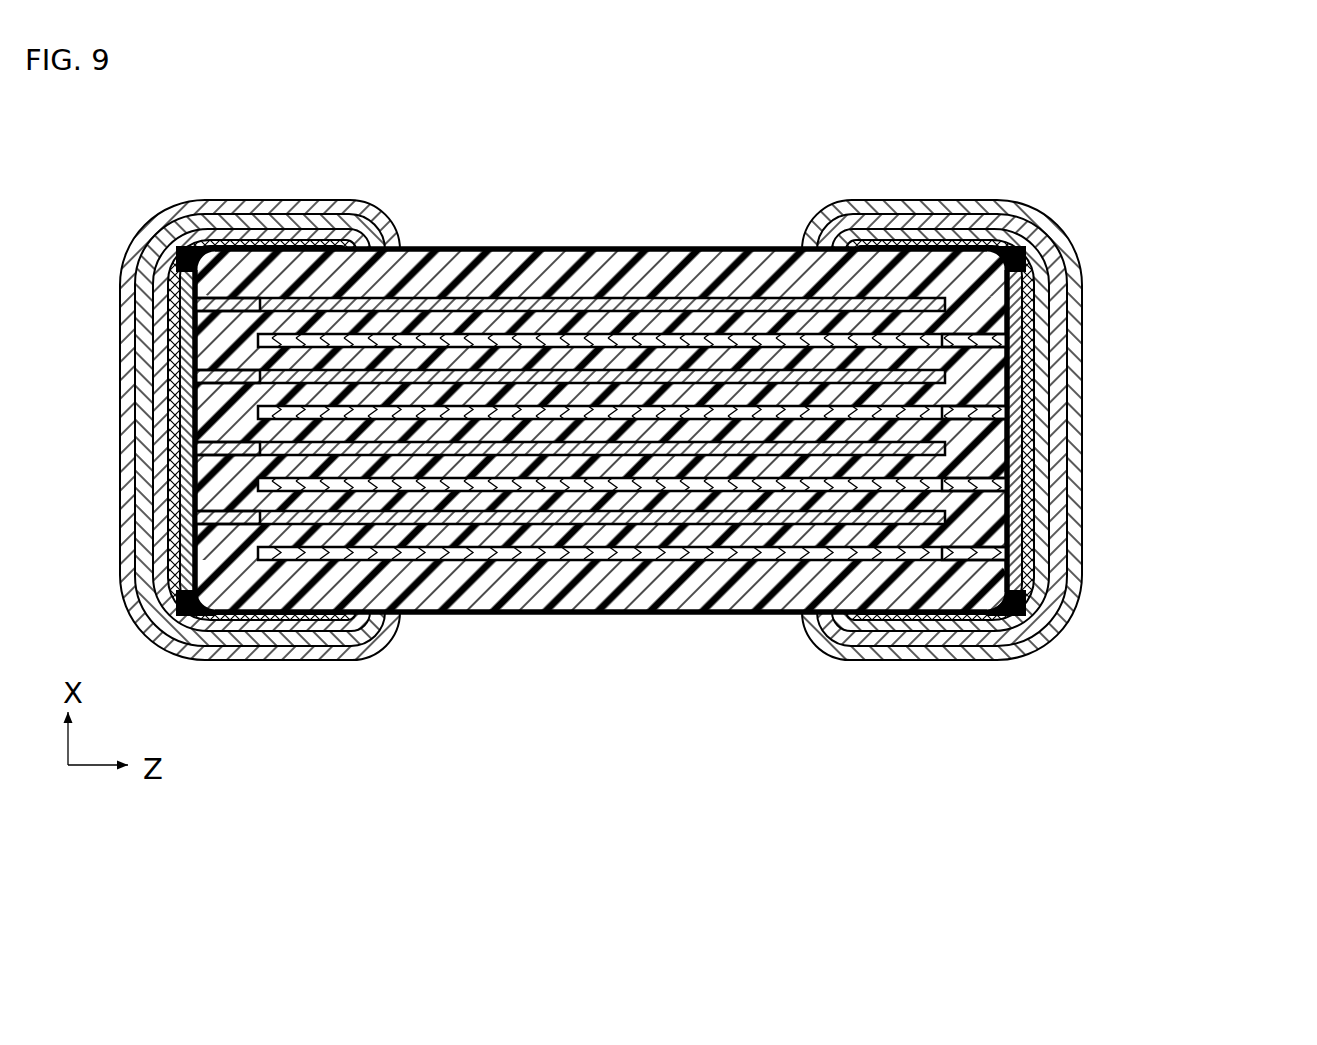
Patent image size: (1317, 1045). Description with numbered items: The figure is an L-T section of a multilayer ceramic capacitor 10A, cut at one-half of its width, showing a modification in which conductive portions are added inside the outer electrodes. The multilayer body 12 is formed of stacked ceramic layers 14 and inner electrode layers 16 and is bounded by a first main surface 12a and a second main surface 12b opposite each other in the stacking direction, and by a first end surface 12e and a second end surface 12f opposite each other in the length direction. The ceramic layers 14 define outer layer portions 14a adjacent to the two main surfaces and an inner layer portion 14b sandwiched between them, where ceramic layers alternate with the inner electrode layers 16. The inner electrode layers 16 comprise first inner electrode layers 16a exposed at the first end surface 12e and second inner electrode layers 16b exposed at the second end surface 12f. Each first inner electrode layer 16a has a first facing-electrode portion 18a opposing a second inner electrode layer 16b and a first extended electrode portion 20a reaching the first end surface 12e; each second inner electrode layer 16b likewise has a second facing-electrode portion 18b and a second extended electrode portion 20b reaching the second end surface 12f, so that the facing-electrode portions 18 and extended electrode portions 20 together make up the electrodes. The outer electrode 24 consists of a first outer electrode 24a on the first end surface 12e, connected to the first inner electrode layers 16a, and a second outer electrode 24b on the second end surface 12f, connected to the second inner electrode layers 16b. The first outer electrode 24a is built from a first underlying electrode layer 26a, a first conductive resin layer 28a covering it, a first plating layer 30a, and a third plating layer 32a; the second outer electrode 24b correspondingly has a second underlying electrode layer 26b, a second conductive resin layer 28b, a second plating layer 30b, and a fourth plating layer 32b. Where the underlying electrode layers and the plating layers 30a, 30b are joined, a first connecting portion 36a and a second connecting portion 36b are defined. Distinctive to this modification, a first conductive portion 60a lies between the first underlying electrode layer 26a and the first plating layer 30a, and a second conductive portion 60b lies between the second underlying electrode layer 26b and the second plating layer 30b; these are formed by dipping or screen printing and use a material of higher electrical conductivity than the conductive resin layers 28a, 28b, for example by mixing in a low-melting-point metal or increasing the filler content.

The multilayer ceramic capacitor 10A is at (113, 181).
The multilayer body 12 is at (606, 511).
The first main surface 12a is at (739, 247).
The second main surface 12b is at (777, 612).
The first end surface 12e is at (193, 545).
The second end surface 12f is at (1012, 440).
The ceramic layers 14 is at (578, 152).
The outer layer portions 14a is at (609, 277).
The inner layer portion 14b is at (662, 355).
The inner electrode layers 16 is at (722, 853).
The first inner electrode layers 16a is at (430, 377).
The second inner electrode layers 16b is at (460, 412).
The second internal electrode layer 18 is at (882, 853).
The first facing-electrode portion 18a is at (514, 375).
The second facing-electrode portion 18b is at (550, 413).
The exposed portion of internal electrode 20 is at (1044, 853).
The first extended electrode portion 20a is at (200, 330).
The second extended electrode portion 20b is at (1000, 345).
The outer electrode 24 is at (1194, 648).
The first outer electrode 24a is at (188, 197).
The second outer electrode 24b is at (1018, 196).
The first underlying electrode layer 26a is at (188, 300).
The second underlying electrode layer 26b is at (1016, 303).
The first conductive resin layer 28a is at (160, 436).
The second conductive resin layer 28b is at (1045, 395).
The first plating layer 30a is at (247, 222).
The second plating layer 30b is at (947, 222).
The third plating layer 32a is at (321, 206).
The fourth plating layer 32b is at (878, 206).
The first connecting portion 36a is at (183, 255).
The second connecting portion 36b is at (1025, 258).
The first conductive portion 60a is at (172, 380).
The second conductive portion 60b is at (1030, 480).